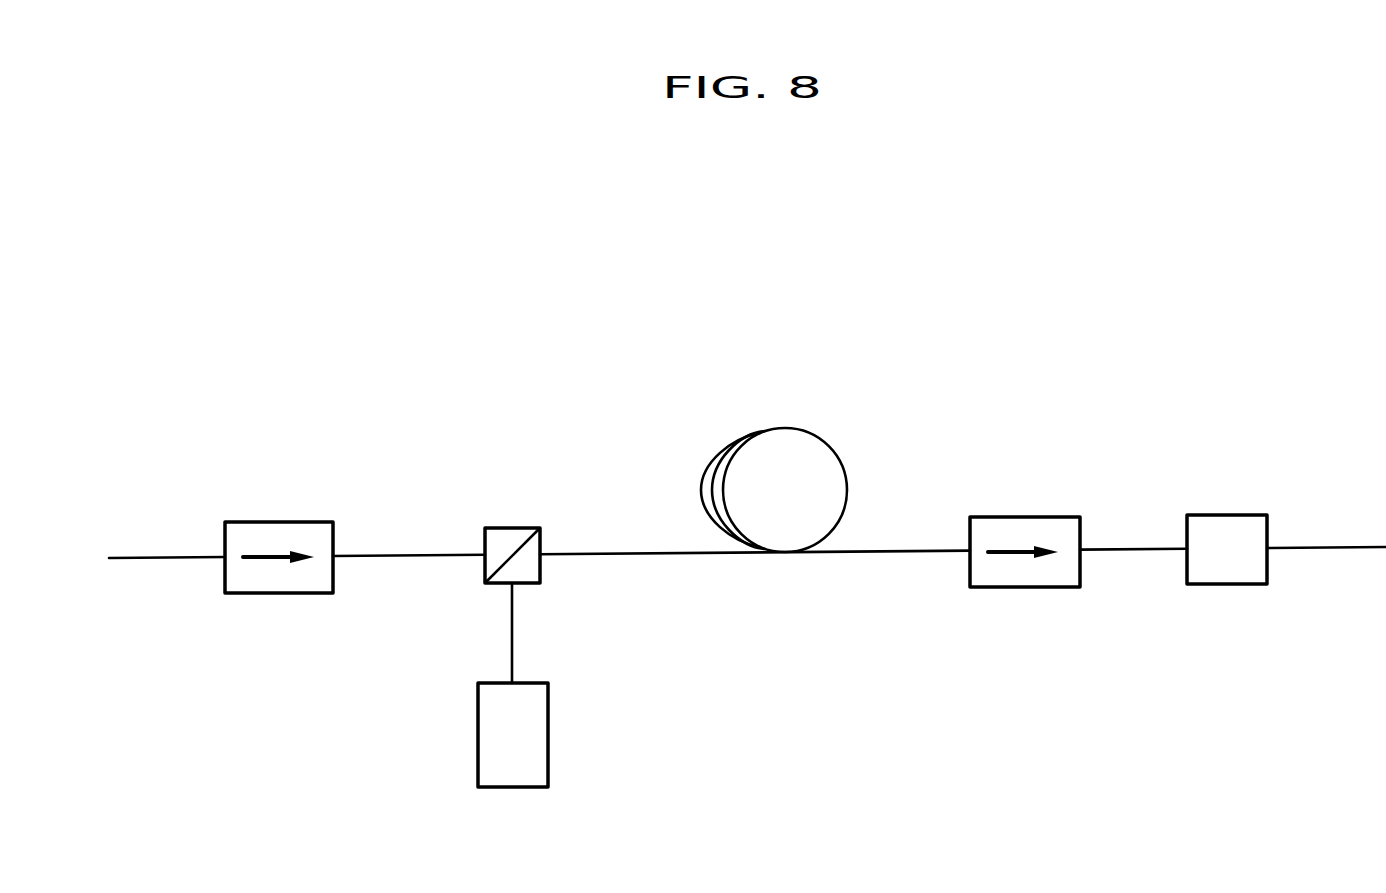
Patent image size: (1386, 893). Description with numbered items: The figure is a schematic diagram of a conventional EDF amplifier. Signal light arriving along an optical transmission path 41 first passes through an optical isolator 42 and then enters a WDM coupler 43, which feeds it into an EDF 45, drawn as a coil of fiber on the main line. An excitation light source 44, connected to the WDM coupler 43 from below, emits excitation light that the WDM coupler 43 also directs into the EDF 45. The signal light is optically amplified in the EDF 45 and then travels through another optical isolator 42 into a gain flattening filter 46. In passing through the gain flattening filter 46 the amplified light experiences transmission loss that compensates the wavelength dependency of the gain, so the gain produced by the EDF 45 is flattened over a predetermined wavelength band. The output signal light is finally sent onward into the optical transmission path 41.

The optical transmission path 41 is at (158, 557).
The optical isolator 42 is at (280, 522).
The WDM coupler 43 is at (512, 528).
The excitation light source 44 is at (548, 735).
The EDF 45 is at (785, 428).
The gain flattening filter 46 is at (1227, 515).